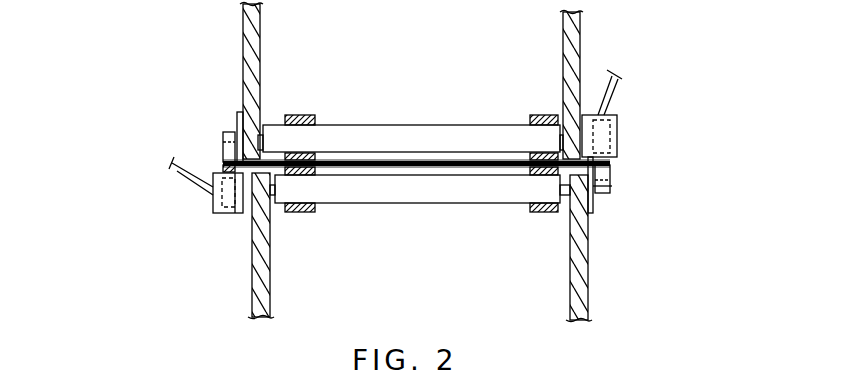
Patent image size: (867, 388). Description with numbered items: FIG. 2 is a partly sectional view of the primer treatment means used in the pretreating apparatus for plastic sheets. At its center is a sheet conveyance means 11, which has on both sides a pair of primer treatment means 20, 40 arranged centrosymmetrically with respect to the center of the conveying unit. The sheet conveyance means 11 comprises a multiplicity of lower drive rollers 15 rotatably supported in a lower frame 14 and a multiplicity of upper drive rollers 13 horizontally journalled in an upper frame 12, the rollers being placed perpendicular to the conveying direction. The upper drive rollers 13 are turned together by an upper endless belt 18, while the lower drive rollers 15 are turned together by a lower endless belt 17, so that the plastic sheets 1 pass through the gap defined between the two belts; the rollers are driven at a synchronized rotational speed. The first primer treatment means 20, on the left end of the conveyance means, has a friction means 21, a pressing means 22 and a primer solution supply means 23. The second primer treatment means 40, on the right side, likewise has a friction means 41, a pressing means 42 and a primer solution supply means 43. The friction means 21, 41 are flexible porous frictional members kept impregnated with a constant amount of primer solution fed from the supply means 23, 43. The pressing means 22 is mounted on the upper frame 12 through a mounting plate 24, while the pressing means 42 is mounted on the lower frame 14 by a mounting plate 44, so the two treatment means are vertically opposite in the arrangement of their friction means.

The plastic sheets 1 is at (612, 164).
The sheet conveyance means 11 is at (482, 101).
The upper frame 12 is at (262, 45).
The upper drive rollers 13 is at (398, 124).
The lower frame 14 is at (266, 270).
The lower drive rollers 15 is at (425, 205).
The lower endless belt 17 is at (312, 212).
The upper endless belt 18 is at (306, 115).
The first primer treatment means 20 is at (136, 165).
The friction means 21 is at (213, 172).
The pressing means 22 is at (225, 131).
The primer solution supply means 23 is at (213, 206).
The mounting plate 24 is at (239, 112).
The second primer treatment means 40 is at (660, 185).
The friction means 41 is at (618, 150).
The pressing means 42 is at (598, 195).
The primer solution supply means 43 is at (618, 118).
The mounting plate 44 is at (590, 213).